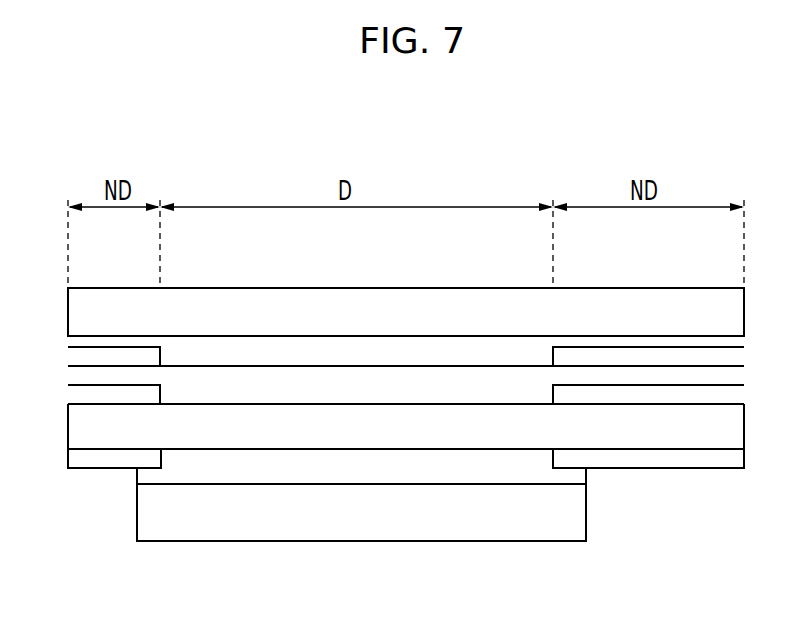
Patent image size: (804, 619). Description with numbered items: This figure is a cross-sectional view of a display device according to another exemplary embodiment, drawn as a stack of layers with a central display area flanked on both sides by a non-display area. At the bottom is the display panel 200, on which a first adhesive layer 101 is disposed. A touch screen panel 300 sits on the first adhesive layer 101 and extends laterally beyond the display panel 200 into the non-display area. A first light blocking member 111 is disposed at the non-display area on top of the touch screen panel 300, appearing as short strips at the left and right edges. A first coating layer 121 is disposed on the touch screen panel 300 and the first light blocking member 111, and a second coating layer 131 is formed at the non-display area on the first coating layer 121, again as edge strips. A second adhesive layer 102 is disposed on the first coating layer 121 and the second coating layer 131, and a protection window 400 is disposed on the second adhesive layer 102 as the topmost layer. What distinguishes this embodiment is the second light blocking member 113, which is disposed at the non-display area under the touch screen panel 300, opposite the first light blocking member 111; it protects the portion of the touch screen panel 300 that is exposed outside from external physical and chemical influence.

The protection window 400 is at (737, 313).
The second adhesive layer 102 is at (344, 351).
The first coating layer 121 is at (434, 382).
The second coating layer 131 is at (72, 360).
The first light blocking member 111 is at (72, 394).
The touch screen panel 300 is at (737, 430).
The second light blocking member 113 is at (72, 460).
The first adhesive layer 101 is at (443, 470).
The display panel 200 is at (365, 520).